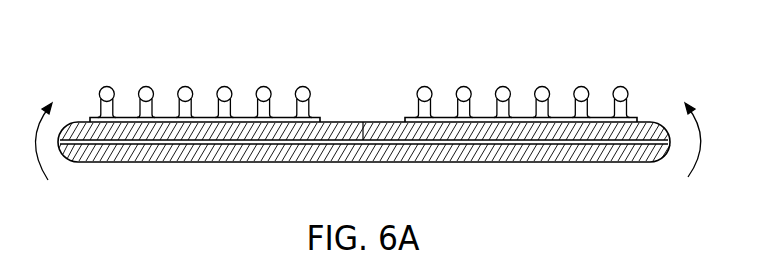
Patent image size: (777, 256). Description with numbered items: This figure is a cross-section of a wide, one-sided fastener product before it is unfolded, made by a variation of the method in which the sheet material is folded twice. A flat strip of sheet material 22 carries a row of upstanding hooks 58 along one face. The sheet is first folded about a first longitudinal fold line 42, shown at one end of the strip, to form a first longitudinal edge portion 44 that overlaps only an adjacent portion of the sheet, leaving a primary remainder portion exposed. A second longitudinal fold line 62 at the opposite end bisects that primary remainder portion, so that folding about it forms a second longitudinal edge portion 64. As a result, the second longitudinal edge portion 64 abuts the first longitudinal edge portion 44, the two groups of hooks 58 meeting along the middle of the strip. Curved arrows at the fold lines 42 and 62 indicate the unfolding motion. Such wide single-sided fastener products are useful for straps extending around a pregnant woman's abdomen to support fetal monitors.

The substrate 22 is at (512, 162).
The first longitudinal edge portion 44 is at (521, 67).
The hook 58 is at (442, 88).
The second longitudinal fold line 62 is at (70, 162).
The first longitudinal fold line 42 is at (657, 162).
The second longitudinal edge portion 64 is at (88, 56).